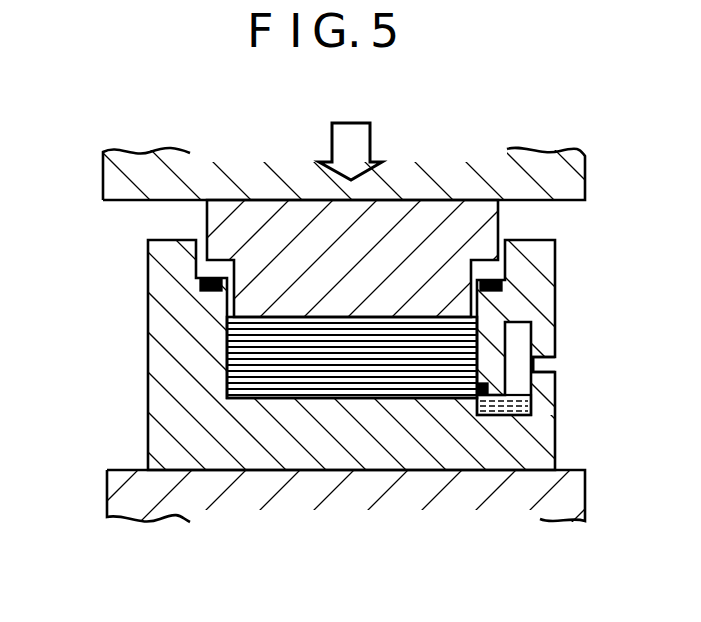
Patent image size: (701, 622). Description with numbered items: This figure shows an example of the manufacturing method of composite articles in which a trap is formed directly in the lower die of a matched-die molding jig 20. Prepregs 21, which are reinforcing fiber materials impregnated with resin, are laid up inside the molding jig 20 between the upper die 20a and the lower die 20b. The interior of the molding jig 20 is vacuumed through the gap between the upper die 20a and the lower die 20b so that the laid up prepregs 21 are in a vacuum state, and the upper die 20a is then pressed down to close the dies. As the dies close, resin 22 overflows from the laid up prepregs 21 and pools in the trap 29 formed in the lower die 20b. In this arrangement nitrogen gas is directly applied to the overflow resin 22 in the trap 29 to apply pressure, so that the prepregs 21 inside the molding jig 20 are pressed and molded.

The molding jig 20 is at (350, 335).
The upper die 20a is at (210, 224).
The lower die 20b is at (150, 437).
The prepregs 21 is at (259, 398).
The resin 22 is at (503, 417).
The trap 29 is at (541, 383).